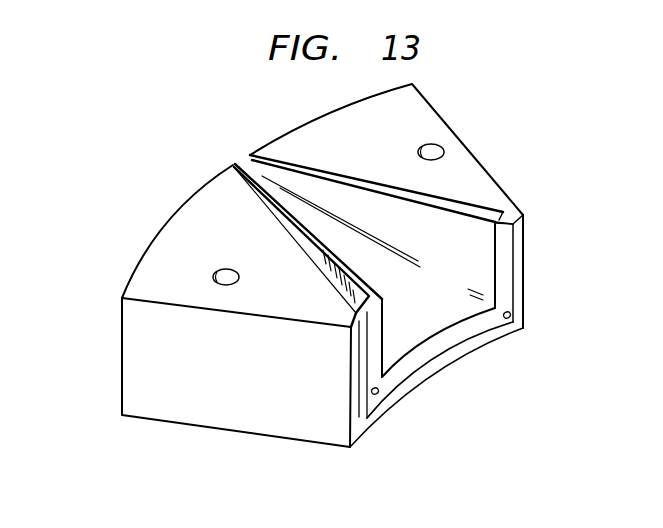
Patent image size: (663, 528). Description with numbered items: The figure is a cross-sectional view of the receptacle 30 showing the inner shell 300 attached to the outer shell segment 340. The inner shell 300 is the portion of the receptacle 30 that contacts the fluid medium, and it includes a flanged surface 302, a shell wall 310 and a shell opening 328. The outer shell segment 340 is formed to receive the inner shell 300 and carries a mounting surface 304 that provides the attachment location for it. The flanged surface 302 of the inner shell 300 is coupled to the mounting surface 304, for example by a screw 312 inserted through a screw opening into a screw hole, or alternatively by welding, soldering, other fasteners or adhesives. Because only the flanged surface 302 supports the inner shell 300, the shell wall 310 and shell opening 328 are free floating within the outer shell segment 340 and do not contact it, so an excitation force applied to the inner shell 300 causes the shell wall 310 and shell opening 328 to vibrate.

The receptacle 30 is at (497, 150).
The shell opening 328 is at (245, 157).
The outer shell segment 340 is at (210, 190).
The shell wall 310 is at (296, 233).
The inner shell 300 is at (388, 325).
The flanged surface 302 is at (450, 339).
The mounting surface 304 is at (365, 425).
The screw 312 is at (380, 395).